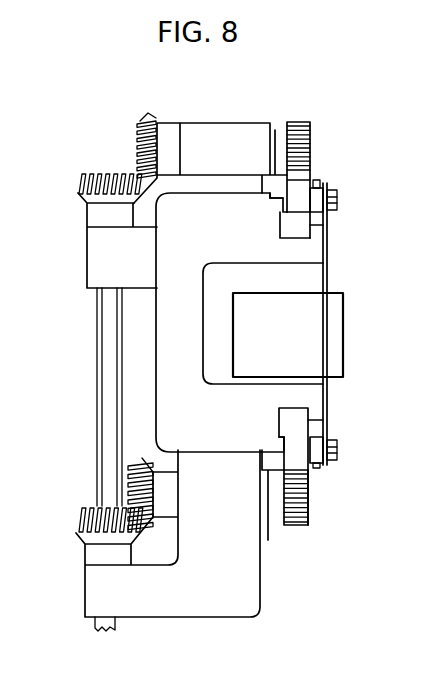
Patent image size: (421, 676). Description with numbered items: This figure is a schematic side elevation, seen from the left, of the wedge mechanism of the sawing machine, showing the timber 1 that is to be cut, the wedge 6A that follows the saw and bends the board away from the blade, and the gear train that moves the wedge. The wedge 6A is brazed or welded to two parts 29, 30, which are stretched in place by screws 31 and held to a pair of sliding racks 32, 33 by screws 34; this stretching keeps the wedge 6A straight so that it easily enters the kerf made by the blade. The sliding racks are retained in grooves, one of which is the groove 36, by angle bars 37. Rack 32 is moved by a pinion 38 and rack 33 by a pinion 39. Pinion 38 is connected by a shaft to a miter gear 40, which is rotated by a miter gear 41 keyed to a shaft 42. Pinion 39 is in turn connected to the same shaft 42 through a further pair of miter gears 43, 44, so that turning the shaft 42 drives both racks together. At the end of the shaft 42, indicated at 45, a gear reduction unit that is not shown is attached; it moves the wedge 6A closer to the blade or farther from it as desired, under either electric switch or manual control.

The timber 1 is at (347, 318).
The wedge 6A is at (332, 276).
The wedge-holding part 29 is at (303, 206).
The wedge-holding part 30 is at (296, 445).
The stretching screw 31 is at (326, 186).
The sliding rack 32 is at (316, 180).
The sliding rack 33 is at (311, 480).
The holding screw 34 is at (338, 197).
The groove 36 is at (272, 232).
The angle bar 37 is at (268, 199).
The pinion 38 is at (310, 134).
The pinion 39 is at (309, 520).
The miter gear 40 is at (129, 138).
The miter gear 41 is at (78, 172).
The shaft 42 is at (90, 319).
The miter gear 43 is at (135, 448).
The miter gear 44 is at (76, 513).
The shaft end 45 is at (88, 629).